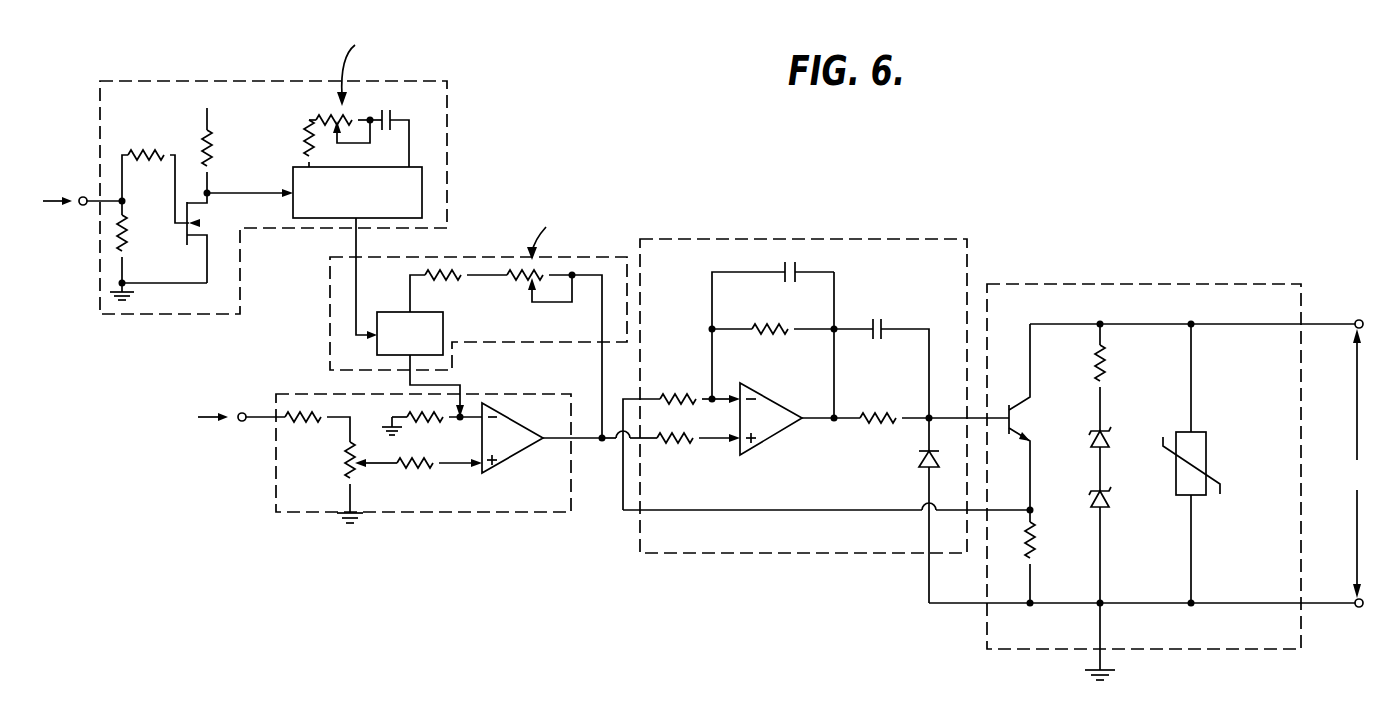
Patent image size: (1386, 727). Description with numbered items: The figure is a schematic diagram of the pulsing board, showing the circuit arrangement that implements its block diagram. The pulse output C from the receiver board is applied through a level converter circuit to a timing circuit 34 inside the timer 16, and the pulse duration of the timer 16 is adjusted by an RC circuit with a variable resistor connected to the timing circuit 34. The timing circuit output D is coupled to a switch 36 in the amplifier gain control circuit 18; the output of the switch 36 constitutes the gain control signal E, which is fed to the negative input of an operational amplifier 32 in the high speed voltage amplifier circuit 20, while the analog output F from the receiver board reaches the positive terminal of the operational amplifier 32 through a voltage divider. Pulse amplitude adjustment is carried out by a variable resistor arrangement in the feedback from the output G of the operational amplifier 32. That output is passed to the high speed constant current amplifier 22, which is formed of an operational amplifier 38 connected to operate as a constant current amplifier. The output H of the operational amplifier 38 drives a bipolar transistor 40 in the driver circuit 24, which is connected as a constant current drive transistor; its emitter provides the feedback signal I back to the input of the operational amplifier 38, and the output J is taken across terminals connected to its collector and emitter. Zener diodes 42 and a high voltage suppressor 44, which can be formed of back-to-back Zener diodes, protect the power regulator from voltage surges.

The timer 16 is at (457, 118).
The amplifier gain control circuit 18 is at (322, 285).
The high speed voltage amplifier circuit 20 is at (482, 523).
The high speed constant current amplifier 22 is at (837, 230).
The driver circuit 24 is at (1189, 273).
The operational amplifier 32 is at (505, 460).
The timing circuit 34 is at (293, 167).
The switch 36 is at (443, 318).
The operational amplifier 38 is at (771, 437).
The bipolar transistor 40 is at (1019, 404).
The Zener diodes 42 is at (1078, 427).
The high voltage suppressor 44 is at (1217, 448).